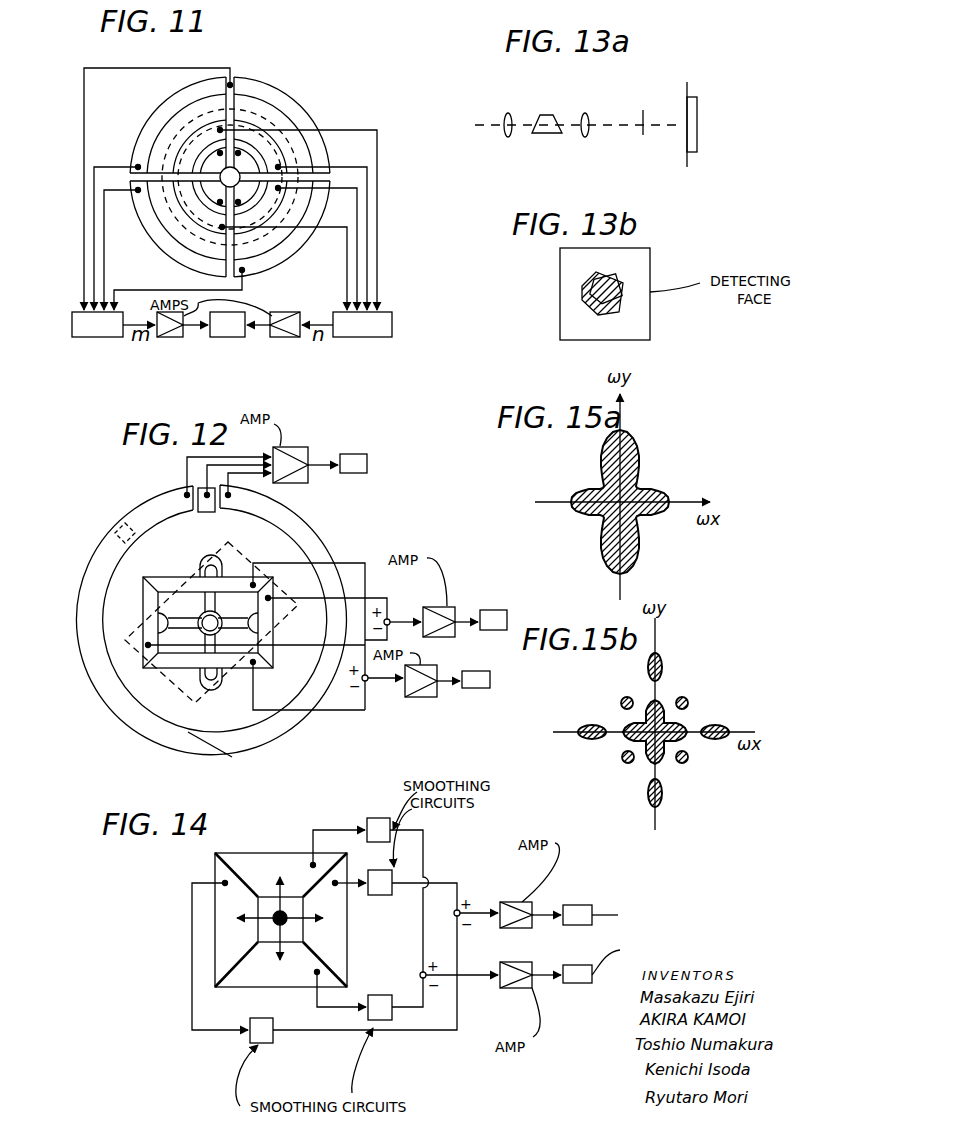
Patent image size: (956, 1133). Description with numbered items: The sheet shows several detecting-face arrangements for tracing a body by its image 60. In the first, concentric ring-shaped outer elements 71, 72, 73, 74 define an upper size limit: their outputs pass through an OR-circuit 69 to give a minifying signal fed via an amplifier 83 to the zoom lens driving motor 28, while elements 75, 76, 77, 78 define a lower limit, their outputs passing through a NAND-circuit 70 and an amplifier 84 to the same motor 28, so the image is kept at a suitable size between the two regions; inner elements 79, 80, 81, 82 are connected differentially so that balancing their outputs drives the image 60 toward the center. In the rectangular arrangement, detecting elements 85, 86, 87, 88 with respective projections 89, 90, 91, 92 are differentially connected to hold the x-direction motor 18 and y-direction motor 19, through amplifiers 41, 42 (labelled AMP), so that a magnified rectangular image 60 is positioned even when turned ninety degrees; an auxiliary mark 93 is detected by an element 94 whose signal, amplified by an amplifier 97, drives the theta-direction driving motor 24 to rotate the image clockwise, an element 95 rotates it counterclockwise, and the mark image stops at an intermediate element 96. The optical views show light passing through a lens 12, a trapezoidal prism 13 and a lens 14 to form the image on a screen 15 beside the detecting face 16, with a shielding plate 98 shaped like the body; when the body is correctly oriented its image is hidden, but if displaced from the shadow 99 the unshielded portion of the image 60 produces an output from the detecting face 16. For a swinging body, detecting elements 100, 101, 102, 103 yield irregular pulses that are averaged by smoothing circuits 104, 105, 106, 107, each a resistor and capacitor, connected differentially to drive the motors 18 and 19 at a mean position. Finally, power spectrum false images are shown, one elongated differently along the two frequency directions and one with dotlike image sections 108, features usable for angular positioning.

In FIG. 11, the image 60 is at (172, 224).
In FIG. 13B, the image 60 is at (582, 290).
In FIG. 12, the image 60 is at (185, 690).
In FIG. 14, the image 60 is at (277, 926).
In FIG. 11, the OR-circuit 69 is at (93, 340).
In FIG. 11, the NAND-circuit 70 is at (365, 340).
In FIG. 11, the element 71 is at (213, 68).
In FIG. 11, the element 72 is at (136, 166).
In FIG. 11, the element 73 is at (137, 192).
In FIG. 11, the element 74 is at (244, 272).
In FIG. 11, the element 75 is at (343, 167).
In FIG. 11, the element 76 is at (360, 130).
In FIG. 11, the element 77 is at (348, 227).
In FIG. 11, the element 78 is at (358, 188).
In FIG. 11, the element 79 is at (240, 156).
In FIG. 11, the element 80 is at (238, 153).
In FIG. 11, the element 81 is at (240, 200).
In FIG. 11, the element 82 is at (243, 205).
In FIG. 11, the amplifier 83 is at (165, 340).
In FIG. 11, the amplifier 84 is at (284, 340).
In FIG. 11, the zoom lens driving motor 28 is at (226, 340).
In FIG. 13A, the lens 12 is at (510, 137).
In FIG. 13A, the trapezoidal prism 13 is at (548, 114).
In FIG. 13A, the lens 14 is at (586, 137).
In FIG. 13A, the shielding plate 98 is at (643, 134).
In FIG. 13A, the screen 15 is at (686, 102).
In FIG. 13A, the detecting face 16 is at (697, 132).
In FIG. 13B, the detecting face 16 is at (643, 315).
In FIG. 13B, the shadow 99 is at (613, 282).
In FIG. 12, the amplifier 97 is at (293, 446).
In FIG. 12, the theta-direction driving motor 24 is at (353, 453).
In FIG. 12, the auxiliary mark 93 is at (128, 523).
In FIG. 12, the element 94 is at (103, 552).
In FIG. 12, the element 95 is at (301, 521).
In FIG. 12, the element 96 is at (207, 513).
In FIG. 12, the projection 90 is at (203, 563).
In FIG. 12, the detecting element 86 is at (242, 578).
In FIG. 12, the detecting element 87 is at (156, 618).
In FIG. 12, the detecting element 85 is at (264, 620).
In FIG. 12, the projection 89 is at (259, 646).
In FIG. 12, the projection 91 is at (148, 648).
In FIG. 12, the detecting element 88 is at (255, 666).
In FIG. 12, the projection 92 is at (210, 689).
In FIG. 12, the amplifier 41 is at (439, 598).
In FIG. 14, the amplifier 41 is at (515, 902).
In FIG. 12, the electric motor 18 is at (492, 609).
In FIG. 14, the electric motor 18 is at (572, 905).
In FIG. 12, the amplifier 42 is at (418, 697).
In FIG. 14, the amplifier 42 is at (513, 988).
In FIG. 12, the electric motor 19 is at (475, 689).
In FIG. 14, the electric motor 19 is at (582, 983).
In FIG. 15B, the dotlike image sections 108 is at (622, 698).
In FIG. 14, the detecting element 100 is at (342, 952).
In FIG. 14, the detecting element 101 is at (218, 938).
In FIG. 14, the detecting element 102 is at (250, 853).
In FIG. 14, the detecting element 103 is at (290, 980).
In FIG. 14, the smoothing circuit 104 is at (382, 895).
In FIG. 14, the smoothing circuit 105 is at (273, 1033).
In FIG. 14, the smoothing circuit 106 is at (372, 818).
In FIG. 14, the smoothing circuit 107 is at (385, 1020).